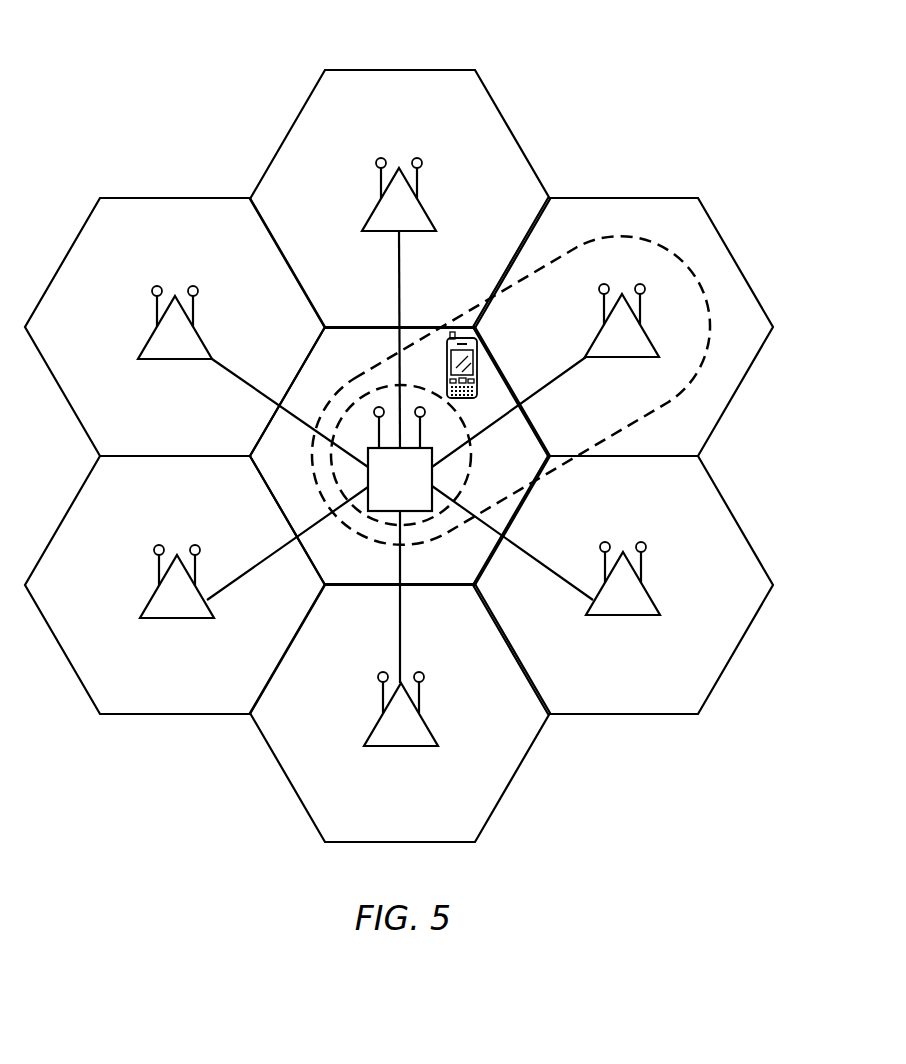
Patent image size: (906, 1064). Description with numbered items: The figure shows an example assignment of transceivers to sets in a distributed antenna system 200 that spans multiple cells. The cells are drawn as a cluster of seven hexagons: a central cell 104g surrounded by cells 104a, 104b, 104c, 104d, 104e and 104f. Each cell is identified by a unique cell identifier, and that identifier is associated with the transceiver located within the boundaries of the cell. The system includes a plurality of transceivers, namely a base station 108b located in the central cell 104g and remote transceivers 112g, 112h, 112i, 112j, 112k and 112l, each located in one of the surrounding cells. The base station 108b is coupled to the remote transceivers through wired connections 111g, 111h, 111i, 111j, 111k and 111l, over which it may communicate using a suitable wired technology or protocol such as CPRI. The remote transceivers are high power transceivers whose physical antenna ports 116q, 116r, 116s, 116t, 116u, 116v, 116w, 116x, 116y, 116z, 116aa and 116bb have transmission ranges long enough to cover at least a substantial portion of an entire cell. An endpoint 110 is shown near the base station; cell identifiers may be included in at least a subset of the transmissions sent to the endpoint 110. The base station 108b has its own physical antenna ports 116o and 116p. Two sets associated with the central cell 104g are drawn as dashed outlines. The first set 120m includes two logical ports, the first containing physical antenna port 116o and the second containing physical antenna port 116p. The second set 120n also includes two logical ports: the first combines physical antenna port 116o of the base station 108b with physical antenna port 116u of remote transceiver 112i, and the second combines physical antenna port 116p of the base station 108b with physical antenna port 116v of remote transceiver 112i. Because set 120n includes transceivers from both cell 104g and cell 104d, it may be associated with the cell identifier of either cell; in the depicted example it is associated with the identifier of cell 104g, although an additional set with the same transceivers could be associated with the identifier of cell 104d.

The distributed antenna system 200 is at (219, 66).
The cell 104a is at (178, 716).
The cell 104b is at (172, 198).
The cell 104c is at (395, 70).
The cell 104d is at (660, 198).
The cell 104e is at (627, 714).
The cell 104f is at (403, 843).
The cell 104g is at (362, 327).
The base station 108b is at (423, 512).
The endpoint 110 is at (478, 365).
The wired connection 111g is at (238, 377).
The wired connection 111h is at (398, 262).
The wired connection 111i is at (537, 393).
The wired connection 111j is at (568, 582).
The wired connection 111k is at (400, 607).
The wired connection 111l is at (236, 580).
The remote transceiver 112g is at (155, 361).
The remote transceiver 112h is at (372, 215).
The remote transceiver 112i is at (620, 358).
The remote transceiver 112j is at (643, 617).
The remote transceiver 112k is at (383, 747).
The remote transceiver 112l is at (157, 621).
The physical antenna port 116o is at (375, 408).
The physical antenna port 116p is at (420, 407).
The physical antenna port 116q is at (152, 291).
The physical antenna port 116r is at (198, 291).
The physical antenna port 116s is at (376, 162).
The physical antenna port 116t is at (422, 162).
The physical antenna port 116u is at (604, 283).
The physical antenna port 116v is at (645, 286).
The physical antenna port 116w is at (600, 546).
The physical antenna port 116x is at (646, 546).
The physical antenna port 116y is at (378, 676).
The physical antenna port 116z is at (424, 676).
The physical antenna port 116aa is at (155, 548).
The physical antenna port 116bb is at (197, 546).
The set 120m is at (380, 525).
The set 120n is at (708, 352).